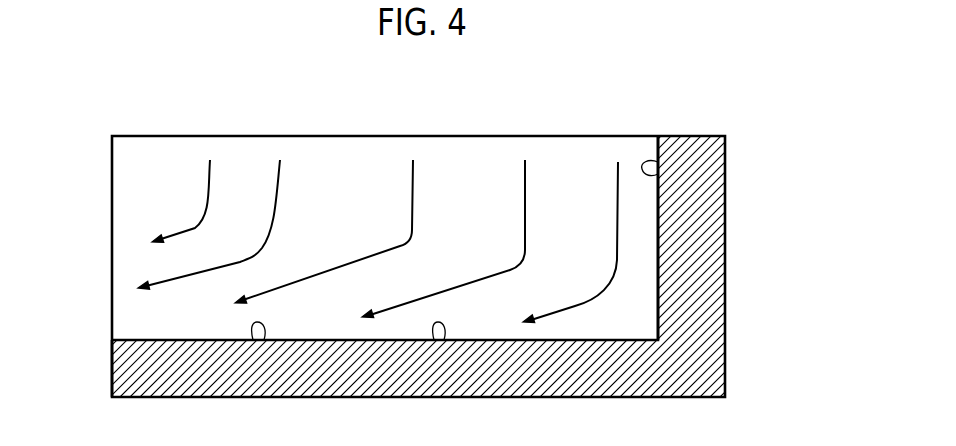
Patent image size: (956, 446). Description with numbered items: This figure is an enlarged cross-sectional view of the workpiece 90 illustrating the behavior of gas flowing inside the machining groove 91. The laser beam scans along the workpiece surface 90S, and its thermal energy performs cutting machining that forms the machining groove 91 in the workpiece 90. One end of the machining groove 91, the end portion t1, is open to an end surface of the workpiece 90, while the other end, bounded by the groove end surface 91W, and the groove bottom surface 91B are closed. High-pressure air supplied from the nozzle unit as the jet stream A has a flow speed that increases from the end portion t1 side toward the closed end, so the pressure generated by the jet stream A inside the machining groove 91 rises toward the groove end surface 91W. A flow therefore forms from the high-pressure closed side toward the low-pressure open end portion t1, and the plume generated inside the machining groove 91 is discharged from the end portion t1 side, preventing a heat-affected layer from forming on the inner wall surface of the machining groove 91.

The workpiece 90 is at (736, 283).
The workpiece surface 90S is at (692, 136).
The machining groove 91 is at (443, 340).
The groove bottom surface 91B is at (262, 340).
The groove end surface 91W is at (657, 170).
The end portion t1 is at (112, 340).
The jet stream A is at (588, 121).